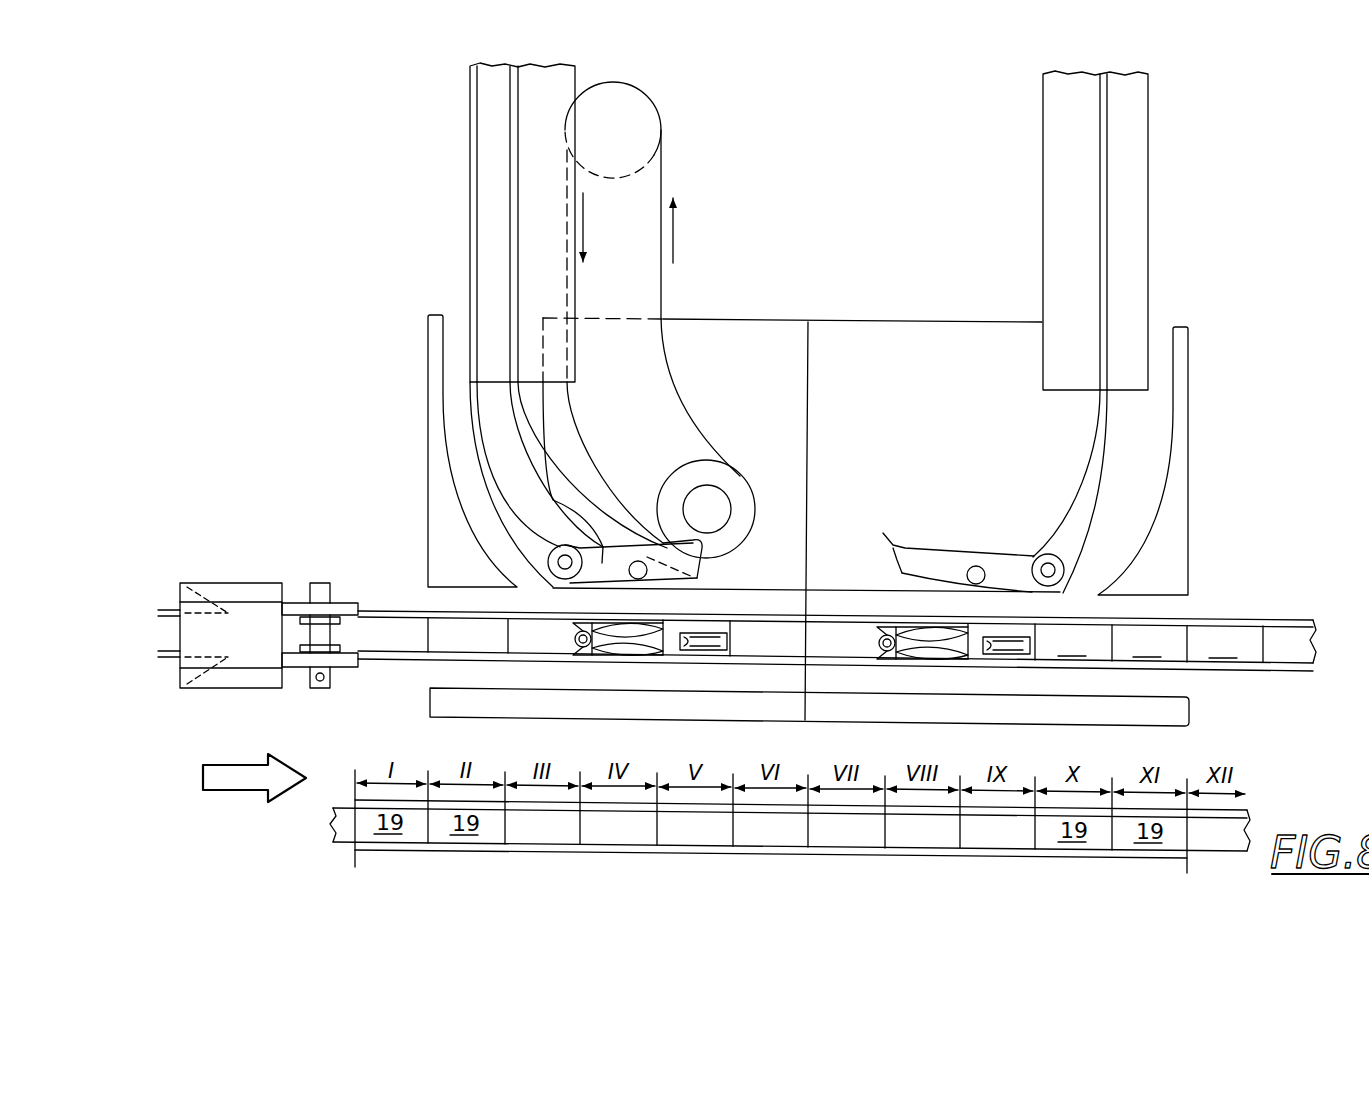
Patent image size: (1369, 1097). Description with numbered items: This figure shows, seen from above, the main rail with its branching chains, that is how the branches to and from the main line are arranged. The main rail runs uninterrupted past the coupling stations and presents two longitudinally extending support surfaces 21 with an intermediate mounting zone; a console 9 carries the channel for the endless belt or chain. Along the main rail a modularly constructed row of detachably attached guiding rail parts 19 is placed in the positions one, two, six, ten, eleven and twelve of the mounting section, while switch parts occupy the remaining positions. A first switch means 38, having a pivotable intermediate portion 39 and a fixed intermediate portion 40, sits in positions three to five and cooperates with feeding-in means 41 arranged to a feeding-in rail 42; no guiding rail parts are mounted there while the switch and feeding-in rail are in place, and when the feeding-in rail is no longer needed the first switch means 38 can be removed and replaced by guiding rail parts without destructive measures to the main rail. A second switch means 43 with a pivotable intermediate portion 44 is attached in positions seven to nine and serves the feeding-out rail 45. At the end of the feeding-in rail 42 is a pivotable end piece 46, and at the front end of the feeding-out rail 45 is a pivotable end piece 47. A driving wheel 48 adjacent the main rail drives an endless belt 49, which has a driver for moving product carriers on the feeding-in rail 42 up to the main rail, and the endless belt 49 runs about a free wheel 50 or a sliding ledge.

The console 9 is at (312, 630).
The guiding rail parts 19 is at (803, 625).
The support surfaces 21 is at (386, 660).
The first switch means 38 is at (591, 660).
The pivotable intermediate portion 39 is at (633, 653).
The fixed intermediate portion 40 is at (712, 643).
The feeding-in means 41 is at (400, 376).
The feeding-in rail 42 is at (488, 158).
The second switch means 43 is at (963, 668).
The pivotable intermediate portion 44 is at (932, 653).
The feeding-out rail 45 is at (1120, 175).
The pivotable end piece 46 is at (602, 535).
The pivotable end piece 47 is at (915, 558).
The driving wheel 48 is at (708, 508).
The endless belt 49 is at (663, 180).
The free wheel 50 is at (633, 133).